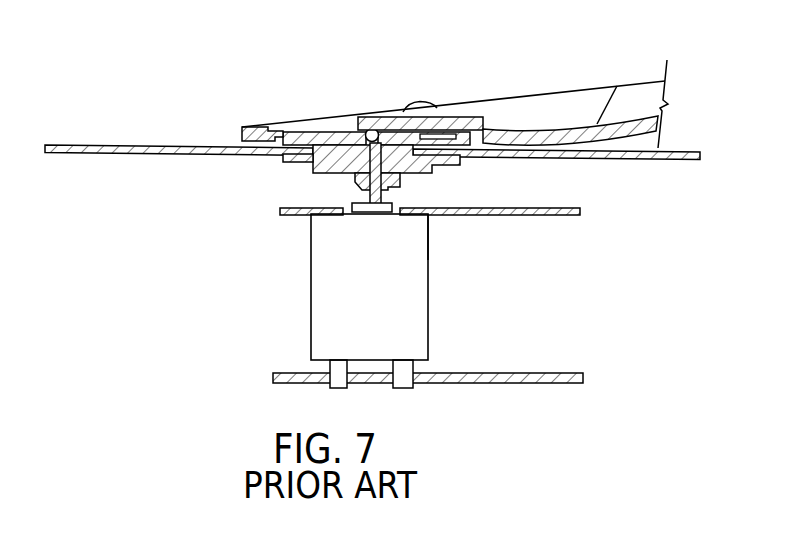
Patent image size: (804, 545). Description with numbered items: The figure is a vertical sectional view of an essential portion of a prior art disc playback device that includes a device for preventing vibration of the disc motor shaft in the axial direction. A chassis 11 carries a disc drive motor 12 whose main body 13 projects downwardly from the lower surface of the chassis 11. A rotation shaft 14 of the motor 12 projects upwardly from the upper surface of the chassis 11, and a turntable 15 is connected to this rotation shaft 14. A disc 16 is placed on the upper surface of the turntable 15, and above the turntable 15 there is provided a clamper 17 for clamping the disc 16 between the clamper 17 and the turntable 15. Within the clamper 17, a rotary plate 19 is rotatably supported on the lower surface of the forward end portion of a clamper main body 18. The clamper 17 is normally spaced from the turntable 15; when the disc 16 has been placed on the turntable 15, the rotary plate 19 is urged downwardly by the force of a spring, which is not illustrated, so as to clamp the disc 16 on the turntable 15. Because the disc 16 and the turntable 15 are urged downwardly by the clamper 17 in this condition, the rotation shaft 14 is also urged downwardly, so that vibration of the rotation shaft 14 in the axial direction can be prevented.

The chassis 11 is at (547, 217).
The disc drive motor 12 is at (430, 278).
The main body 13 is at (430, 247).
The rotation shaft 14 is at (387, 177).
The turntable 15 is at (337, 174).
The disc 16 is at (139, 146).
The clamper 17 is at (545, 90).
The clamper main body 18 is at (502, 97).
The rotary plate 19 is at (338, 136).